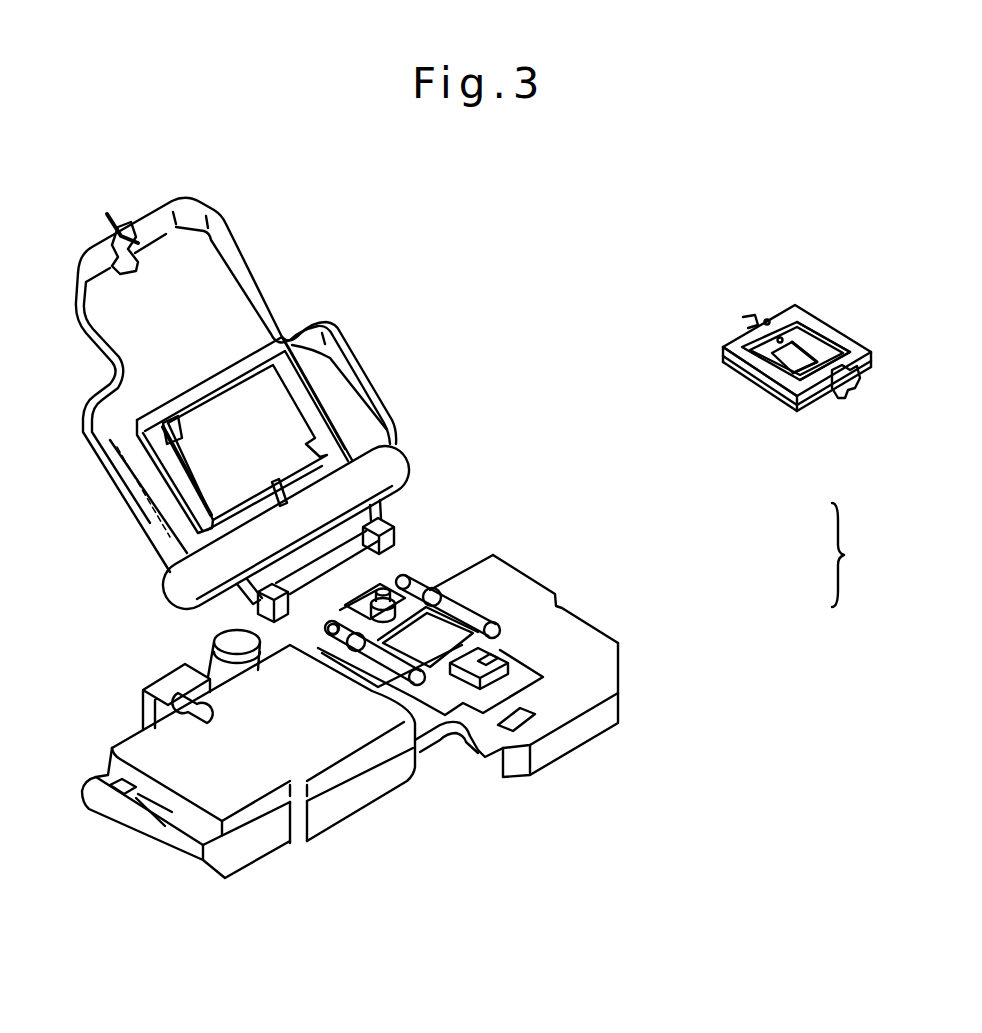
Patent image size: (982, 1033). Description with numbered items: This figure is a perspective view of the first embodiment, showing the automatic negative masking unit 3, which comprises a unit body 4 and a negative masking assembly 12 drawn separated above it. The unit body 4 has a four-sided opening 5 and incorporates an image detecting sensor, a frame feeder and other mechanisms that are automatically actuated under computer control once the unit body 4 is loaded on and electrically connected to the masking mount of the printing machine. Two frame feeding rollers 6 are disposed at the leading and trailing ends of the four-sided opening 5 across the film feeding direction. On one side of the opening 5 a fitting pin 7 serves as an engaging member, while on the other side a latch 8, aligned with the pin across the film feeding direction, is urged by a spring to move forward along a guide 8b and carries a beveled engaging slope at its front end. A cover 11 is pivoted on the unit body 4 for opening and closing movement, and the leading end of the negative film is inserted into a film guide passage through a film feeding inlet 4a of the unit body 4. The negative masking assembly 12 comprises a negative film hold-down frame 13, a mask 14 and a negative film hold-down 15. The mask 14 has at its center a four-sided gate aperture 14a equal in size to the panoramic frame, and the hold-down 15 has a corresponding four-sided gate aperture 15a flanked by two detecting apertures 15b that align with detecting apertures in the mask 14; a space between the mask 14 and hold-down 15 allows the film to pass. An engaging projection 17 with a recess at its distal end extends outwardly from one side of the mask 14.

The automatic negative masking unit 3 is at (854, 555).
The unit body 4 is at (567, 697).
The film feeding inlet 4a is at (128, 795).
The four-sided opening 5 is at (433, 638).
The frame feeding rollers 6 is at (382, 658).
The fitting pin 7 is at (380, 593).
The latch 8 is at (483, 647).
The guide 8b is at (497, 690).
The cover 11 is at (253, 297).
The negative masking assembly 12 is at (817, 360).
The negative film hold-down frame 13 is at (868, 350).
The mask 14 is at (792, 407).
The four-sided gate aperture 14a is at (792, 345).
The negative film hold-down 15 is at (783, 323).
The four-sided gate aperture 15a is at (807, 337).
The detecting apertures 15b is at (752, 372).
The engaging projection 17 is at (747, 320).